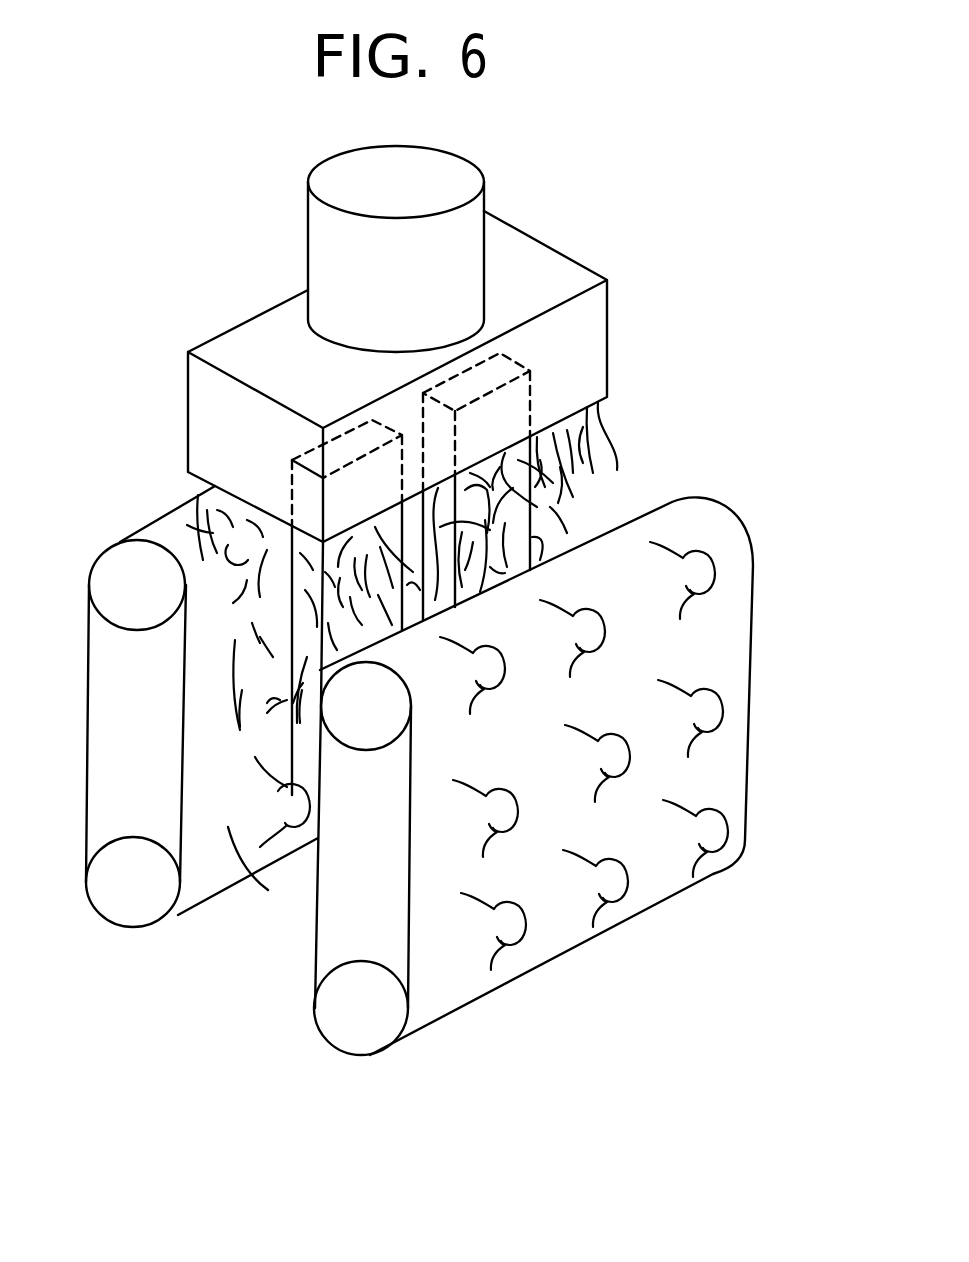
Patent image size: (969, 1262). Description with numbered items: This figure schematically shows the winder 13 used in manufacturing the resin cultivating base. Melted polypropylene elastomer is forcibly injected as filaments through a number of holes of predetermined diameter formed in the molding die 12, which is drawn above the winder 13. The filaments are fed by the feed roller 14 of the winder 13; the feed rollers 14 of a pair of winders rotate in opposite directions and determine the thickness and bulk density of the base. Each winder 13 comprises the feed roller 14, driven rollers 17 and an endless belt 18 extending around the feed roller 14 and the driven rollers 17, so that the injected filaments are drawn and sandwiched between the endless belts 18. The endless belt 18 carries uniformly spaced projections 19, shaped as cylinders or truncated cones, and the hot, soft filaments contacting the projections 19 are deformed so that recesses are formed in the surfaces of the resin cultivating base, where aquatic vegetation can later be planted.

The molding die 12 is at (553, 273).
The winder 13 is at (728, 491).
The feed roller 14 is at (128, 908).
The driven roller 17 is at (118, 570).
The endless belt 18 is at (316, 885).
The projection 19 is at (703, 578).